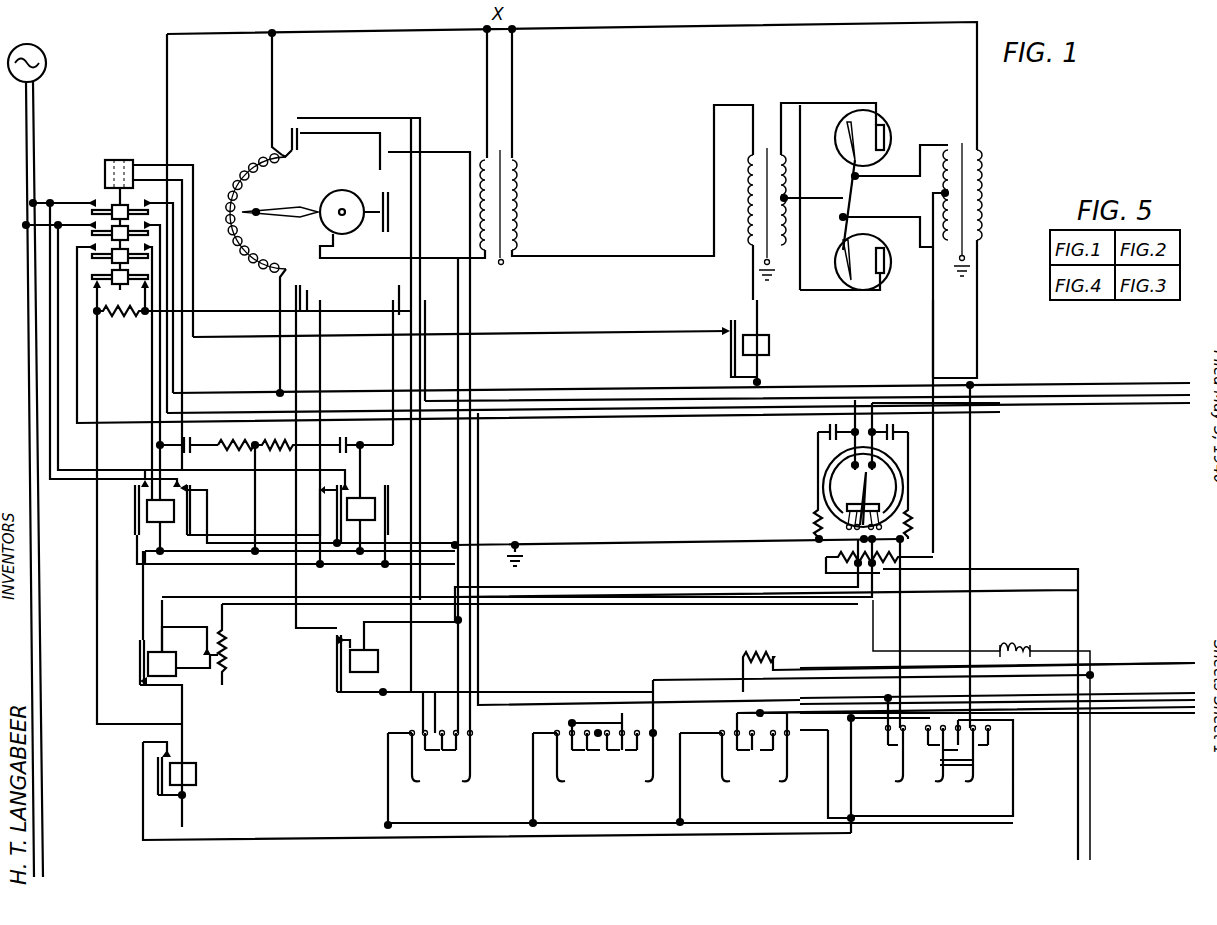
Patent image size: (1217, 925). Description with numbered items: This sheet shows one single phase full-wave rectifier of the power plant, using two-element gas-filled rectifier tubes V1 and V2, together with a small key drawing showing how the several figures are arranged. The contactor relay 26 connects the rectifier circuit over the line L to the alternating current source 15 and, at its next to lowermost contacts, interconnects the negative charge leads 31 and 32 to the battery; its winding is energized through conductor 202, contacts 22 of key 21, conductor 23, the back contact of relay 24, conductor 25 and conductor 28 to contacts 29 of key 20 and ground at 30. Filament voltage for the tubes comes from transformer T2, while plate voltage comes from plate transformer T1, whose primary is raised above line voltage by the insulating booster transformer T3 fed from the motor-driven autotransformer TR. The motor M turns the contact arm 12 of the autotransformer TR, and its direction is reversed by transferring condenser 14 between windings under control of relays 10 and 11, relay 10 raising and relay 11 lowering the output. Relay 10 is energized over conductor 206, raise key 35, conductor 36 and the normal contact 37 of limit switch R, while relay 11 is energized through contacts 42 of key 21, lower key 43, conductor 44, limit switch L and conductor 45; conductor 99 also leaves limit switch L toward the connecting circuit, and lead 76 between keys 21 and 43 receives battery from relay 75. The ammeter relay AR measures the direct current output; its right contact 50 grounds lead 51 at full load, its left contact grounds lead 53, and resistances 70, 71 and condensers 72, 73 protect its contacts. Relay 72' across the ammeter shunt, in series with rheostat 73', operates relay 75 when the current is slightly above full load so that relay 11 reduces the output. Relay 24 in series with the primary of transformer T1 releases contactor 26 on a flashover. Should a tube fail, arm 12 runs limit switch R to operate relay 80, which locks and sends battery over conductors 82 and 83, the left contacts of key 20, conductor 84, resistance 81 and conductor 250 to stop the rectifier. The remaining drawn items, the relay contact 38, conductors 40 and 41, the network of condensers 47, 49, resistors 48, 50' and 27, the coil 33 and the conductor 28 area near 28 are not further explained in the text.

The alternating current source 15 is at (46, 62).
The line L is at (38, 121).
The contactor relay 26 is at (104, 172).
The resistor 27 is at (118, 316).
The conductor 28 is at (97, 571).
The autotransformer TR is at (240, 195).
The contact arm 12 is at (286, 211).
The motor M is at (324, 201).
The condenser 14 is at (388, 205).
The normal contact 37 is at (308, 295).
The relay contact 38 is at (395, 298).
The conductor 45 is at (409, 363).
The conductor 25 is at (524, 336).
The relay 24 is at (769, 344).
The insulating booster transformer T3 is at (512, 144).
The plate transformer T1 is at (752, 150).
The filament transformer T2 is at (957, 336).
The rectifier tube V1 is at (887, 138).
The rectifier tube V2 is at (840, 280).
The conductor 40 is at (931, 341).
The conductor 99 is at (1110, 384).
The lead 51 is at (1042, 397).
The lead 53 is at (1090, 404).
The lead 31 is at (510, 414).
The lead 32 is at (538, 415).
The conductor 23 is at (972, 470).
The ammeter relay AR is at (826, 474).
The right contact 50 is at (926, 435).
The condenser 72 is at (835, 418).
The condenser 73 is at (899, 427).
The resistance 70 is at (813, 520).
The resistance 71 is at (918, 521).
The ground 30 is at (520, 555).
The conductor 41 is at (1004, 569).
The condenser 47 is at (186, 446).
The resistor 48 is at (232, 446).
The resistor 50' is at (296, 437).
The condenser 49 is at (347, 448).
The relay 10 is at (148, 516).
The relay 11 is at (375, 514).
The conductor 36 is at (462, 516).
The conductor 44 is at (481, 669).
The relay 72' is at (179, 689).
The rheostat 73' is at (241, 644).
The relay 80 is at (379, 662).
The relay 75 is at (196, 777).
The key 20 is at (699, 780).
The contacts 29 is at (462, 752).
The raise key 35 is at (627, 768).
The conductor 82 is at (652, 686).
The conductor 84 is at (557, 692).
The resistance 81 is at (757, 651).
The lower key 43 is at (958, 746).
The inductance coil 33 is at (1012, 651).
The conductor 250 is at (1140, 664).
The conductor 202 is at (1117, 712).
The conductor 206 is at (1183, 715).
The key 21 is at (867, 764).
The contacts 42 is at (940, 765).
The contacts 22 is at (976, 758).
The lead 76 is at (476, 842).
The conductor 83 is at (573, 828).